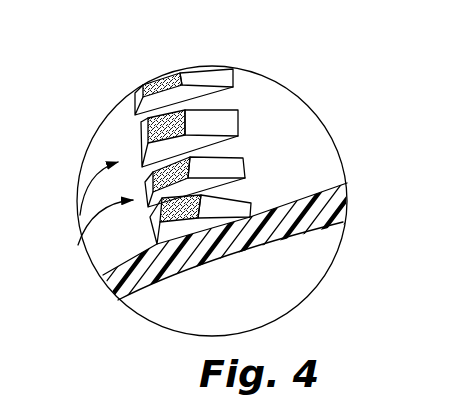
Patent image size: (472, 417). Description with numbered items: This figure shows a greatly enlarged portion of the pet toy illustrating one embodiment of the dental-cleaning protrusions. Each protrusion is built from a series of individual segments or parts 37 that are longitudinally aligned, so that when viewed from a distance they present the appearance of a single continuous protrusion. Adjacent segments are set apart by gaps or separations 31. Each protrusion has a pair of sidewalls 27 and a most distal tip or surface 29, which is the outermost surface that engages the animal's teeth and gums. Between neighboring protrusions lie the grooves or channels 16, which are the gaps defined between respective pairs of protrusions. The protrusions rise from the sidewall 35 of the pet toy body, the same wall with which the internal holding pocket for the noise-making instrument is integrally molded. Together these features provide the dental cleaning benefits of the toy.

The grooves or channels 16 is at (130, 248).
The sidewalls 27 is at (135, 93).
The most distal tip or surface 29 is at (163, 77).
The gaps or separations 31 is at (136, 116).
The sidewall 35 is at (150, 292).
The segment or part 37 is at (138, 95).